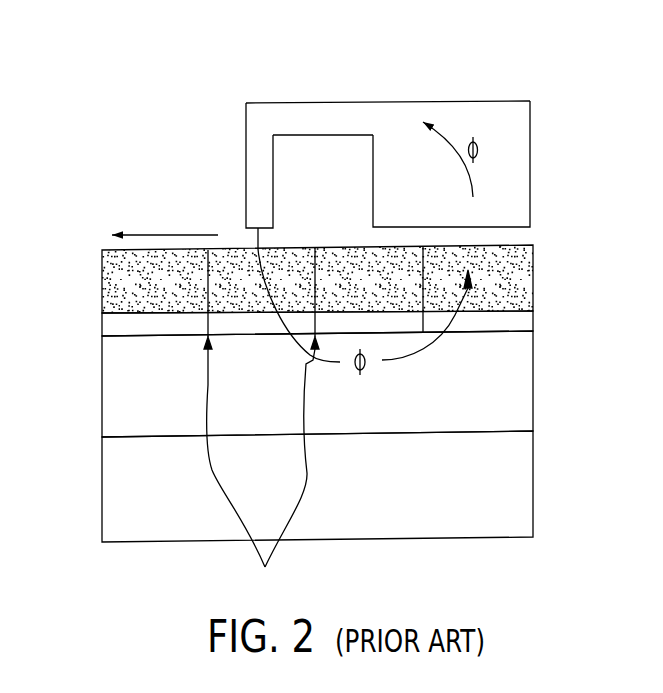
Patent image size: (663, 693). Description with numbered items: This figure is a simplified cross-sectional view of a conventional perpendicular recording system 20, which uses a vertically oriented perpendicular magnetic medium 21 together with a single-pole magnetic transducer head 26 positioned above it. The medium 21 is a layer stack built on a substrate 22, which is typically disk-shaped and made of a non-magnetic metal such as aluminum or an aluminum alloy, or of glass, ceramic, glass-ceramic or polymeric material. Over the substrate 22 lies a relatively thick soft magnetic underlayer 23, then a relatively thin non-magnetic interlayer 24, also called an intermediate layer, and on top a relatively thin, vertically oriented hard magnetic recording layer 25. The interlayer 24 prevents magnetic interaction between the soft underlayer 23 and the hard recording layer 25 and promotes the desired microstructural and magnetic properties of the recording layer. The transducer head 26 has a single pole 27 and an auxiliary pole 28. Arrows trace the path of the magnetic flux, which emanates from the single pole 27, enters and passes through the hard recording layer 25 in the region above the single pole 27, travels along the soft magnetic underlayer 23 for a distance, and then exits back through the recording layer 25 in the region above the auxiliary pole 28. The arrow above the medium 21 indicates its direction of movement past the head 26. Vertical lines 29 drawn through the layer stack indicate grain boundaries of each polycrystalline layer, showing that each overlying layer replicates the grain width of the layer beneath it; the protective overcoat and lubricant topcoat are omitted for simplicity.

The perpendicular recording system 20 is at (392, 127).
The perpendicular magnetic medium 21 is at (324, 390).
The substrate 22 is at (535, 477).
The soft magnetic underlayer 23 is at (535, 368).
The non-magnetic interlayer 24 is at (535, 320).
The hard magnetic recording layer 25 is at (535, 273).
The single-pole magnetic transducer head 26 is at (300, 102).
The single pole 27 is at (246, 202).
The auxiliary pole 28 is at (532, 182).
The vertical lines 29 is at (265, 567).